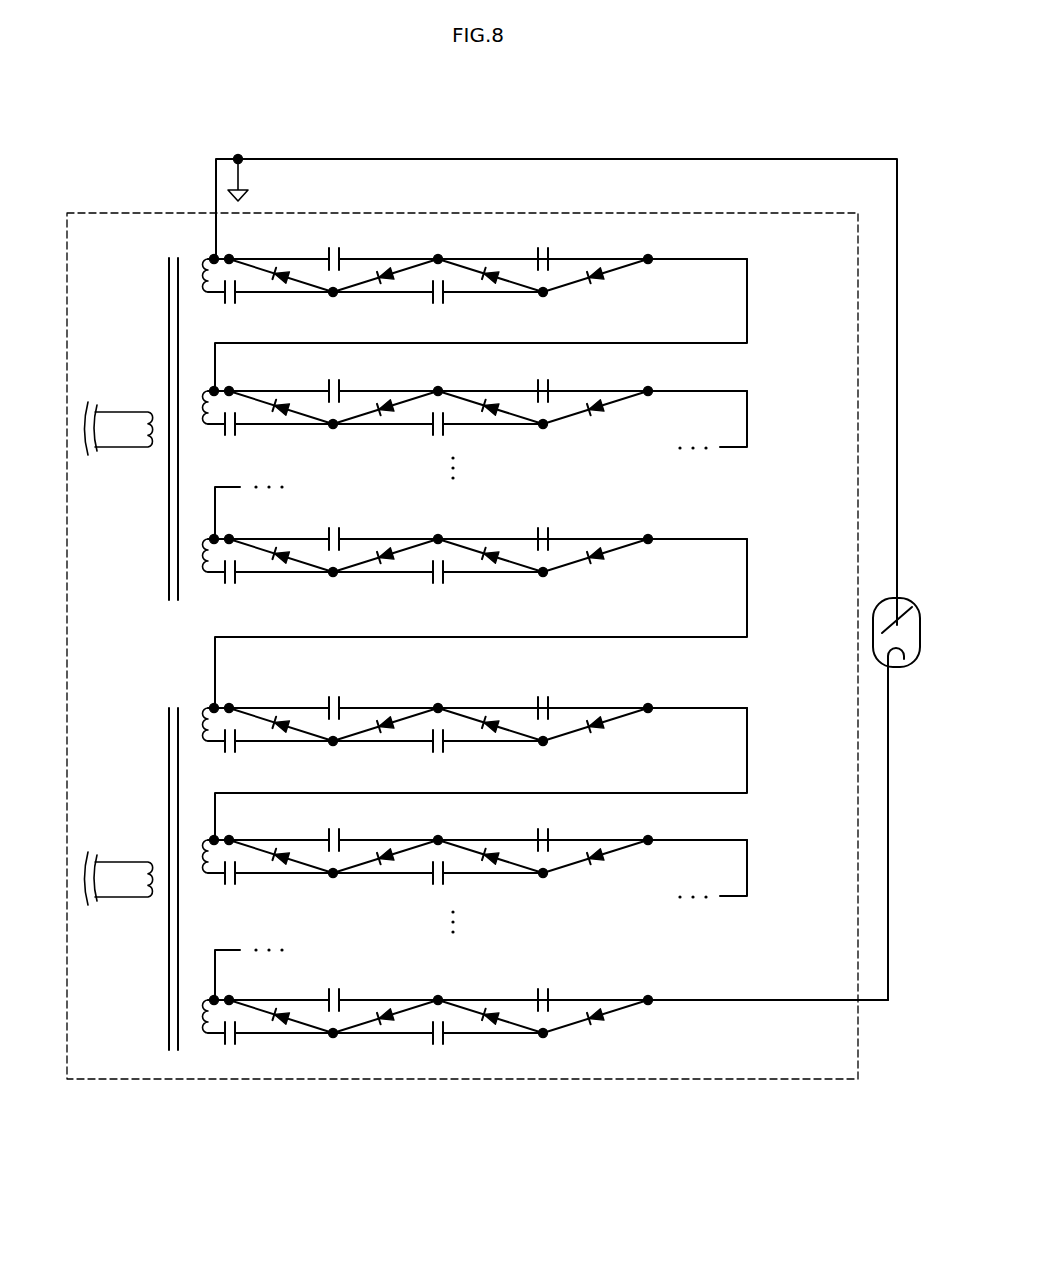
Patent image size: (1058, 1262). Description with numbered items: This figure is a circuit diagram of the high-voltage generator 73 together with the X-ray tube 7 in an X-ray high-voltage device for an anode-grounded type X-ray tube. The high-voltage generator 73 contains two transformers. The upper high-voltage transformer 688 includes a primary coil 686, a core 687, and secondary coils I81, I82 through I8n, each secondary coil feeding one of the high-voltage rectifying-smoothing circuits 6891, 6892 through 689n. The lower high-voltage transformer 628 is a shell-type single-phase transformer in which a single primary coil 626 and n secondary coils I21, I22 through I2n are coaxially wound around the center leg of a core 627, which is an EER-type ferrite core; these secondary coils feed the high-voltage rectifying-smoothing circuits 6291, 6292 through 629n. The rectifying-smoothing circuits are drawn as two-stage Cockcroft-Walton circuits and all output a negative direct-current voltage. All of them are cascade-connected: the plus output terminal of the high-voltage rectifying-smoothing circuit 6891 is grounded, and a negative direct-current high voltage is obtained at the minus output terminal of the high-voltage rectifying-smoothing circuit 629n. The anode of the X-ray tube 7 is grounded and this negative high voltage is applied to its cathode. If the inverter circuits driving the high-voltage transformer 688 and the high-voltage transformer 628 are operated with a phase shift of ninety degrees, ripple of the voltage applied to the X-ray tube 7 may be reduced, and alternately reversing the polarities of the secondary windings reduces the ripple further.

The high-voltage transformer 688 is at (169, 325).
The primary coil 686 is at (150, 412).
The core 687 is at (169, 283).
The secondary coil I8n is at (208, 539).
The secondary coil I82 is at (191, 240).
The secondary coil I81 is at (250, 126).
The high-voltage rectifying-smoothing circuit 6891 is at (516, 319).
The high-voltage rectifying-smoothing circuit 6892 is at (517, 430).
The high-voltage rectifying-smoothing circuit 689n is at (516, 596).
The X-ray tube 7 is at (922, 630).
The high-voltage rectifying-smoothing circuit 6291 is at (516, 768).
The high-voltage rectifying-smoothing circuit 6292 is at (517, 881).
The high-voltage rectifying-smoothing circuit 629n is at (546, 996).
The high-voltage generator 73 is at (858, 1057).
The primary coil 626 is at (150, 897).
The core 627 is at (169, 1017).
The secondary coil I21 is at (208, 742).
The secondary coil I22 is at (208, 874).
The secondary coil I2n is at (243, 1089).
The high-voltage transformer 628 is at (169, 945).